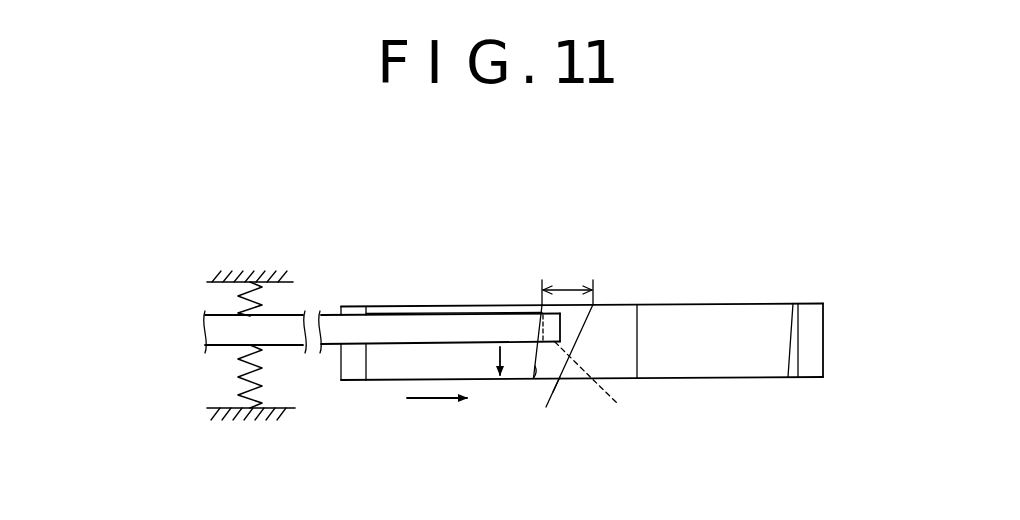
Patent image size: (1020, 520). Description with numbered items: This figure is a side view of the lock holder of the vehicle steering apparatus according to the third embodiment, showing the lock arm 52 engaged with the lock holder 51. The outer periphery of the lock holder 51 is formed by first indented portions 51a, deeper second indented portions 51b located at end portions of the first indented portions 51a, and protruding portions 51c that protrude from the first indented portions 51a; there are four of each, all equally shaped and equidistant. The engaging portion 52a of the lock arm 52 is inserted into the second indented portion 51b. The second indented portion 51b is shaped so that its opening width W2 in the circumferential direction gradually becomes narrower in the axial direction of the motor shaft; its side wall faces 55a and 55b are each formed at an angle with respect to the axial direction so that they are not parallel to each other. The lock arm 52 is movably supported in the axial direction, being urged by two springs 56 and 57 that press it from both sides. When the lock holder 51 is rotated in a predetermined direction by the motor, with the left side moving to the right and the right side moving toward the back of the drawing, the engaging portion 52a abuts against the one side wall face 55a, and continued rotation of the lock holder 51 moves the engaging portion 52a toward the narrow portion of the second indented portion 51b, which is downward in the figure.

The lock holder 51 is at (771, 304).
The first indented portion 51a is at (465, 306).
The second indented portion 51b is at (571, 323).
The protruding portion 51c is at (623, 307).
The lock arm 52 is at (422, 323).
The engaging portion 52a is at (617, 403).
The side wall face 55a is at (533, 383).
The side wall face 55b is at (553, 392).
The spring 56 is at (240, 293).
The spring 57 is at (237, 378).
The opening width W2 is at (567, 279).